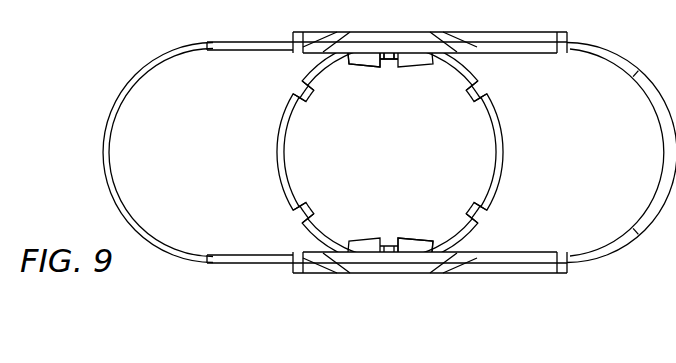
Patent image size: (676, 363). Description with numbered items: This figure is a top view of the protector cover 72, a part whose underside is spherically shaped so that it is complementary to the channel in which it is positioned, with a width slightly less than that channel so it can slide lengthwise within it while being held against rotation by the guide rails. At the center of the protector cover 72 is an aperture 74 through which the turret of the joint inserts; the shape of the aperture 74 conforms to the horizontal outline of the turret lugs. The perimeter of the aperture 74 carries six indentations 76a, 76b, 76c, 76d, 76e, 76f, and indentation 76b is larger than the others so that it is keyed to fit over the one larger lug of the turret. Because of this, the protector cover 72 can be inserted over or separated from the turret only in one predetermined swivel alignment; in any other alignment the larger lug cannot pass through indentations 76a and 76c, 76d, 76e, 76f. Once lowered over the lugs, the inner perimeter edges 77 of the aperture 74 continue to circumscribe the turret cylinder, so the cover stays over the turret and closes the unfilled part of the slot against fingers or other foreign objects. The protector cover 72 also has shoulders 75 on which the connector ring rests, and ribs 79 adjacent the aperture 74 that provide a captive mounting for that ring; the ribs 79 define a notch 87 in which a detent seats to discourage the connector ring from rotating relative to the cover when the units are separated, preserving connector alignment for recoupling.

The protector cover 72 is at (213, 283).
The aperture 74 is at (404, 149).
The shoulders 75 is at (388, 38).
The indentation 76a is at (463, 67).
The indentation 76b is at (504, 148).
The indentation 76c is at (473, 238).
The indentation 76d is at (313, 236).
The indentation 76e is at (285, 152).
The indentation 76f is at (326, 62).
The inner perimeter edges 77 is at (311, 106).
The ribs 79 is at (381, 60).
The notch 87 is at (390, 60).